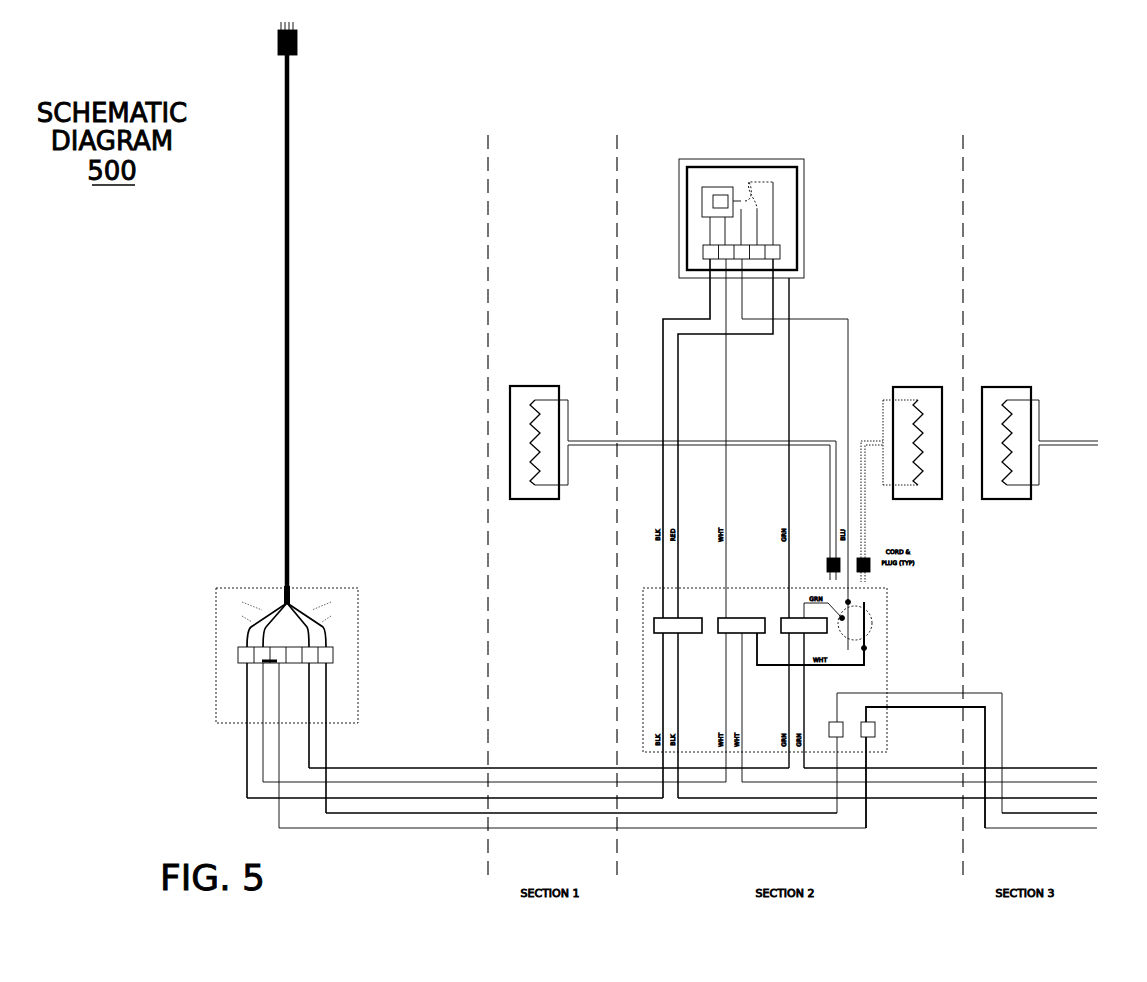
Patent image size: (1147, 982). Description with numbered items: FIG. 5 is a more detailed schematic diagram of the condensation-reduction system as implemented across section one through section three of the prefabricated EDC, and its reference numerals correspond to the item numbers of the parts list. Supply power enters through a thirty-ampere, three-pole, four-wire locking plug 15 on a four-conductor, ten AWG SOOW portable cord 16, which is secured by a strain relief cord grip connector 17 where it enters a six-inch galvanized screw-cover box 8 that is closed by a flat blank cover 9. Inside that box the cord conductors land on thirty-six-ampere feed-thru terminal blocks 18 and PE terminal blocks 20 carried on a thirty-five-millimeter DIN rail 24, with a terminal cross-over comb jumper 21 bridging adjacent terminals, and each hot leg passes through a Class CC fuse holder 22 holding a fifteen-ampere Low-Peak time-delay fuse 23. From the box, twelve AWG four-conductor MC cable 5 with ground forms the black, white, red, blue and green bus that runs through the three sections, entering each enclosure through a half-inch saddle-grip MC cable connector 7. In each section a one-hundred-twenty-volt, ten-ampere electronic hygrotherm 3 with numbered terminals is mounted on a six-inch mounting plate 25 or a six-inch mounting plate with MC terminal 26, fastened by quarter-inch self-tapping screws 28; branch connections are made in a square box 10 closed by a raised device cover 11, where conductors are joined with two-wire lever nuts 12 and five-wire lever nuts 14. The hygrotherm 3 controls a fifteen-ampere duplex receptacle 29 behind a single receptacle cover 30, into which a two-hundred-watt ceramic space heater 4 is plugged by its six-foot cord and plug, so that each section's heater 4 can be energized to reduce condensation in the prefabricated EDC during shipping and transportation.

The electronic hygrotherm 3 is at (788, 208).
The ceramic space heater 4 is at (527, 386).
The MC cable 5 is at (672, 575).
The MC cable connector 7 is at (397, 830).
The galvanized screw-cover box 8 is at (318, 692).
The flat blank cover 9 is at (318, 692).
The square box 10 is at (904, 640).
The raised device cover 11 is at (904, 640).
The 2-wire lever nut 12 is at (688, 633).
The 5-wire lever nut 14 is at (876, 730).
The locking plug 15 is at (297, 43).
The portable cord 16 is at (289, 311).
The strain relief cord grip connector 17 is at (293, 590).
The feed-thru terminal block 18 is at (271, 656).
The PE terminal block 20 is at (309, 665).
The terminal cross-over comb jumper 21 is at (266, 660).
The fuse holder 22 is at (361, 650).
The time-delay fuse 23 is at (335, 657).
The DIN rail 24 is at (318, 692).
The mounting plate 25 is at (887, 650).
The mounting plate with MC terminal 26 is at (788, 208).
The self-tapping screw 28 is at (790, 167).
The duplex receptacle 29 is at (891, 622).
The single receptacle cover 30 is at (872, 618).